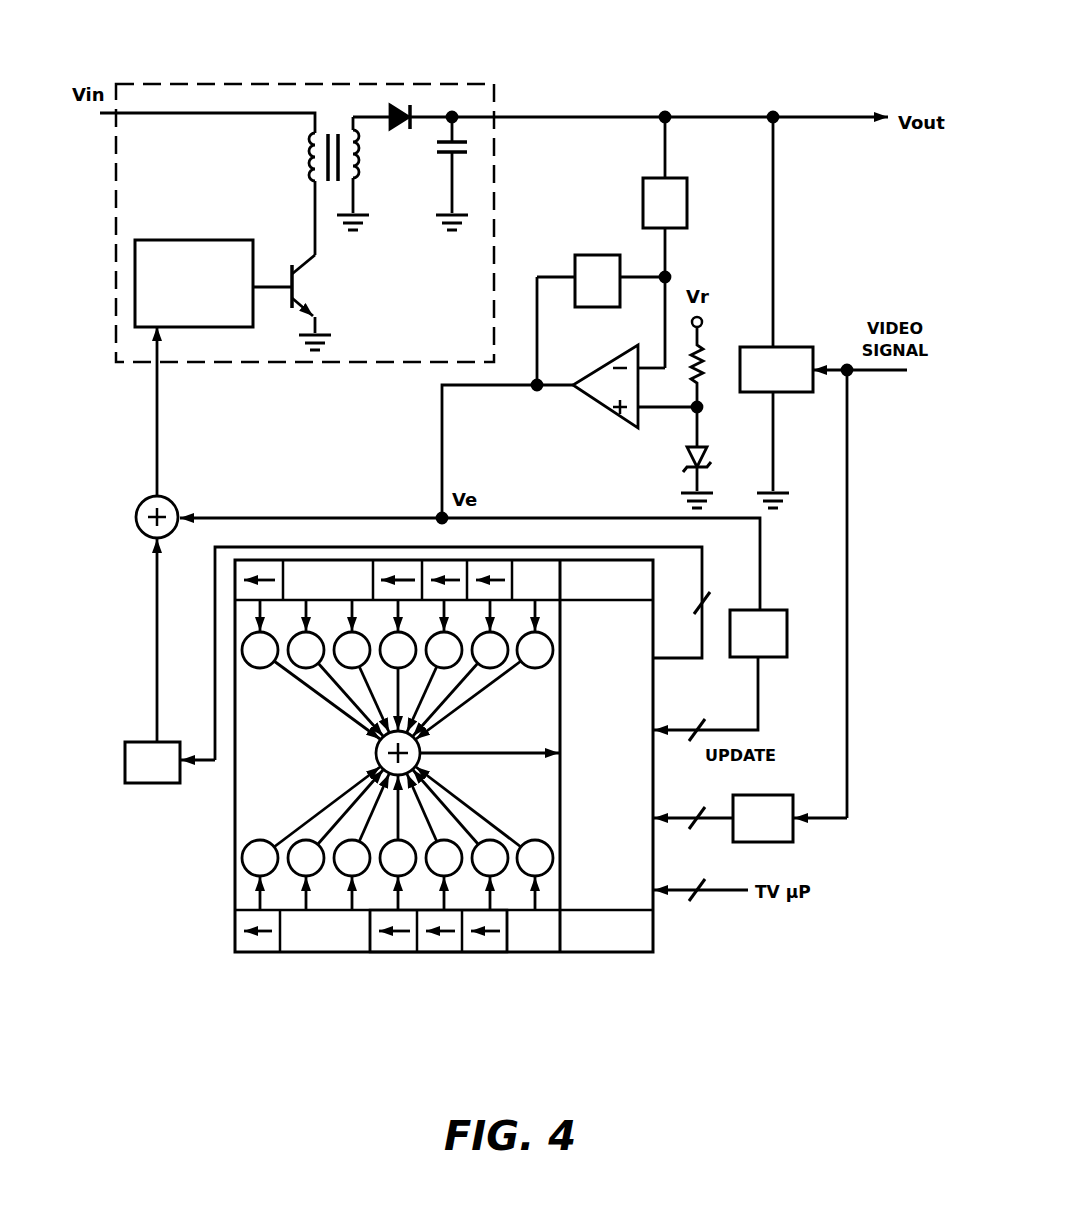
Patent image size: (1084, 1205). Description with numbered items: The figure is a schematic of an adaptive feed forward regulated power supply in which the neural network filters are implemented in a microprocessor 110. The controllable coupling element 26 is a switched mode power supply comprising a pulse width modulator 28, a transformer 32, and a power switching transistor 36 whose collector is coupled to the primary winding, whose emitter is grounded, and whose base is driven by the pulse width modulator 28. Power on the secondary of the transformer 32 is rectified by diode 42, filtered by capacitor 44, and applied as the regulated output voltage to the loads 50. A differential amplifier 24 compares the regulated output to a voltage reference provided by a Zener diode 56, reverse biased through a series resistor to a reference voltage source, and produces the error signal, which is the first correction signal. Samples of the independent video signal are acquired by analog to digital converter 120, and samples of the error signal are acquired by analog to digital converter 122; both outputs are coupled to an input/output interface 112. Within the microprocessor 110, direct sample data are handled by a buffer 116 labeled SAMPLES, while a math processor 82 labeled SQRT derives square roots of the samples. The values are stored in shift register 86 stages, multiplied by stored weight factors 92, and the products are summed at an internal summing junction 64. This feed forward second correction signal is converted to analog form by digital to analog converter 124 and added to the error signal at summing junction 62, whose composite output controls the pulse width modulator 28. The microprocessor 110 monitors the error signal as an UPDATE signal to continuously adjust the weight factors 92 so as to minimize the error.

The controllable coupling element 26 is at (198, 78).
The transformer 32 is at (322, 130).
The diode 42 is at (398, 126).
The capacitor 44 is at (468, 152).
The pulse width modulator 28 is at (222, 240).
The power switching transistor 36 is at (305, 303).
The differential amplifier 24 is at (600, 405).
The loads 50 is at (800, 347).
The Zener diode 56 is at (690, 455).
The summing junction 62 is at (172, 497).
The internal summing junction 64 is at (375, 749).
The math processor 82 is at (640, 954).
The shift register 86 is at (400, 953).
The weight factors 92 is at (300, 668).
The microprocessor 110 is at (283, 954).
The input/output interface 112 is at (632, 898).
The buffer 116 is at (606, 622).
The analog to digital converter 120 is at (785, 610).
The analog to digital converter 122 is at (790, 795).
The digital to analog converter 124 is at (140, 742).